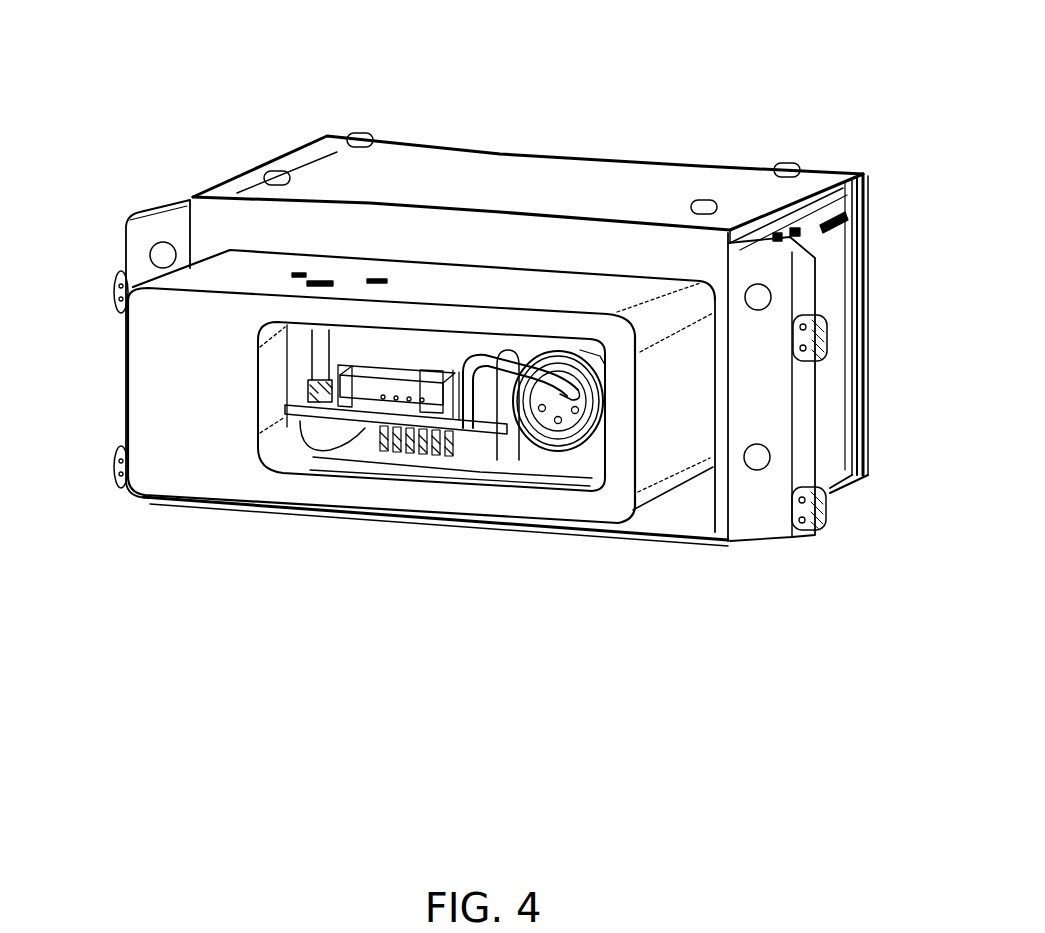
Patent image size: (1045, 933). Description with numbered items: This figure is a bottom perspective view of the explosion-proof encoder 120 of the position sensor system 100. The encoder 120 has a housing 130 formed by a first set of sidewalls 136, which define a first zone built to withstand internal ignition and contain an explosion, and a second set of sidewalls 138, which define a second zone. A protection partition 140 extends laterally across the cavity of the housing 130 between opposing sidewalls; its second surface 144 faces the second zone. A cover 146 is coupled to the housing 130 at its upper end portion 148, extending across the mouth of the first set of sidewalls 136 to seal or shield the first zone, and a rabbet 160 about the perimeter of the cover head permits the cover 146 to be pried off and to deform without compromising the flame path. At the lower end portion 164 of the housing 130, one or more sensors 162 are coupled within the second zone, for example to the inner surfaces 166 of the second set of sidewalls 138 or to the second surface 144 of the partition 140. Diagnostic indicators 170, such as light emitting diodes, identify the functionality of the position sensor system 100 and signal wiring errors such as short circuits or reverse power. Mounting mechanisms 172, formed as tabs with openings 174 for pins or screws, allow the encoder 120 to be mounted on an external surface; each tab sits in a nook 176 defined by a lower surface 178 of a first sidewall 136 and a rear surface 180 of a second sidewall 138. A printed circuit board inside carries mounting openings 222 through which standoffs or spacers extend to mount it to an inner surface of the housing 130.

The position sensor system 100 is at (777, 735).
The explosion-proof encoder 120 is at (828, 68).
The housing 130 is at (715, 172).
The first set of sidewalls 136 is at (282, 163).
The second set of sidewalls 138 is at (273, 490).
The protection partition 140 is at (398, 330).
The second surface 144 is at (357, 340).
The cover 146 is at (874, 213).
The upper end portion 148 is at (835, 497).
The rabbet 160 is at (860, 490).
The sensors 162 is at (362, 442).
The lower end portion 164 is at (468, 527).
The inner surfaces 166 is at (290, 462).
The diagnostic indicators 170 is at (322, 275).
The mounting mechanisms 172 is at (125, 248).
The openings 174 is at (172, 246).
The nook 176 is at (665, 518).
The lower surface 178 is at (697, 522).
The rear surface 180 is at (562, 522).
The mounting openings 222 is at (313, 363).